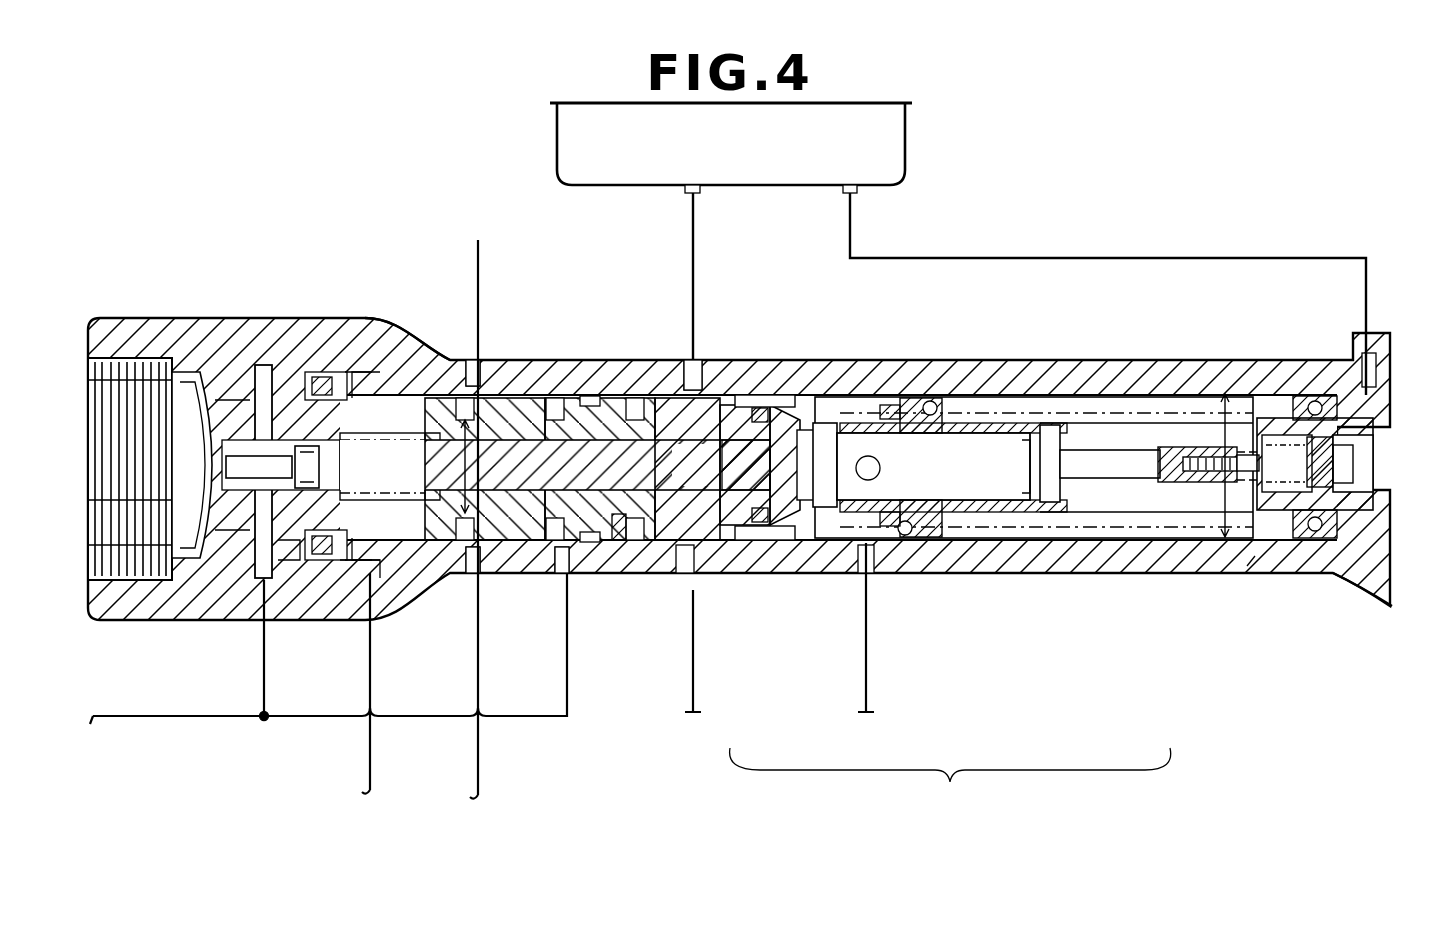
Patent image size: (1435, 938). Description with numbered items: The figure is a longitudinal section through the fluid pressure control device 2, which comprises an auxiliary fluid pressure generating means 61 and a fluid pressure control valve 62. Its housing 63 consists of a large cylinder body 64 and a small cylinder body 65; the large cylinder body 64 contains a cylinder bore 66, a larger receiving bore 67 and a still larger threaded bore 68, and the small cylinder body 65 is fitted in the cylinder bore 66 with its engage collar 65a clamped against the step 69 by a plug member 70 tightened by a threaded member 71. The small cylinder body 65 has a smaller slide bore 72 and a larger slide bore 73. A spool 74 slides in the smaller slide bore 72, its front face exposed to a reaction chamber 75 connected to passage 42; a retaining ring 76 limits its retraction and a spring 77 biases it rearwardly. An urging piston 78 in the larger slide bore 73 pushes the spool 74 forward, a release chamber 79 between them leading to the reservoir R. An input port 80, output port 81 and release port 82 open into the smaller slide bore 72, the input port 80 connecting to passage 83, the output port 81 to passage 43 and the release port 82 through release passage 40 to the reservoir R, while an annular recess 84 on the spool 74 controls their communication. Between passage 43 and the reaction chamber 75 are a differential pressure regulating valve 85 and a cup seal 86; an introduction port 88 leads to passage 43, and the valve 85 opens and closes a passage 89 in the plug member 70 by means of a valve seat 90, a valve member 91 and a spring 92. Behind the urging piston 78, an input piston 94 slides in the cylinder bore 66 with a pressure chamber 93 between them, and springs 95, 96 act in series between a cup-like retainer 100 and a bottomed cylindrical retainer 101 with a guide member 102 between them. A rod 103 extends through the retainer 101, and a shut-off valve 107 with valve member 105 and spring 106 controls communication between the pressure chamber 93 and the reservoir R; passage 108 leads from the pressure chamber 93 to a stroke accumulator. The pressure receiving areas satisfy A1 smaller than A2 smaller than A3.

The fluid pressure control device 2 is at (950, 785).
The release passage 40 is at (695, 262).
The passage 42 is at (370, 770).
The passage 43 is at (205, 722).
The auxiliary fluid pressure generating means 61 is at (1247, 566).
The fluid pressure control valve 62 is at (660, 580).
The housing 63 is at (540, 402).
The large cylinder body 64 is at (548, 320).
The small cylinder body 65 is at (504, 423).
The engage collar 65a is at (418, 336).
The cylinder bore 66 is at (1003, 538).
The receiving bore 67 is at (250, 398).
The threaded bore 68 is at (118, 582).
The step 69 is at (360, 398).
The plug member 70 is at (203, 375).
The threaded member 71 is at (163, 365).
The smaller slide bore 72 is at (648, 398).
The larger slide bore 73 is at (755, 403).
The spool 74 is at (595, 545).
The reaction chamber 75 is at (480, 372).
The retaining ring 76 is at (440, 535).
The spring 77 is at (348, 582).
The urging piston 78 is at (790, 540).
The release chamber 79 is at (728, 545).
The input port 80 is at (497, 573).
The output port 81 is at (548, 573).
The release port 82 is at (705, 392).
The passage 83 is at (476, 273).
The annular recess 84 is at (620, 542).
The differential pressure regulating valve 85 is at (318, 384).
The cup seal 86 is at (370, 392).
The introduction port 88 is at (252, 580).
The passage 89 is at (265, 505).
The valve seat 90 is at (290, 552).
The valve member 91 is at (300, 458).
The spring 92 is at (382, 466).
The pressure chamber 93 is at (1040, 512).
The input piston 94 is at (1362, 601).
The spring 95 is at (975, 400).
The spring 96 is at (907, 538).
The cup-like retainer 100 is at (1285, 432).
The bottomed cylindrical retainer 101 is at (978, 520).
The guide member 102 is at (922, 405).
The rod 103 is at (1110, 452).
The valve member 105 is at (1345, 520).
The spring 106 is at (1228, 425).
The shut-off valve 107 is at (1350, 418).
The passage 108 is at (868, 663).
The pressure receiving area A1 is at (555, 466).
The pressure receiving area A2 is at (721, 465).
The pressure receiving area A3 is at (1272, 505).
The reservoir R is at (712, 161).